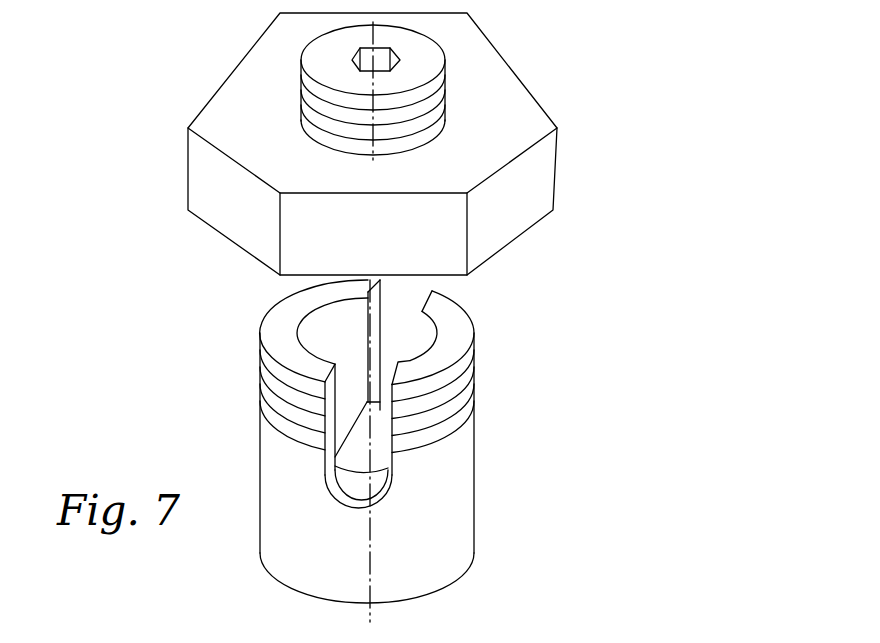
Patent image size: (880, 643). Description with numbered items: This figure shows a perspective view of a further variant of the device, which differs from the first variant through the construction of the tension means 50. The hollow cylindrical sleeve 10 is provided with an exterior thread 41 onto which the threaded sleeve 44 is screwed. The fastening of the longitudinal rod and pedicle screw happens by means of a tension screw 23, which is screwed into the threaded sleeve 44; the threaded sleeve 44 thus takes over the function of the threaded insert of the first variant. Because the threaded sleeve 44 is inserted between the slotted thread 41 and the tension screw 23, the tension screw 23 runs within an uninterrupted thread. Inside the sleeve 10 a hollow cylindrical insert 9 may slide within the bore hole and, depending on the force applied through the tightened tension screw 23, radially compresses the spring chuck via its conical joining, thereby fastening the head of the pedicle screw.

The tension means 50 is at (403, 144).
The threaded sleeve 44 is at (527, 190).
The tension screw 23 is at (330, 70).
The sleeve 10 is at (456, 451).
The exterior thread 41 is at (460, 390).
The insert 9 is at (375, 488).